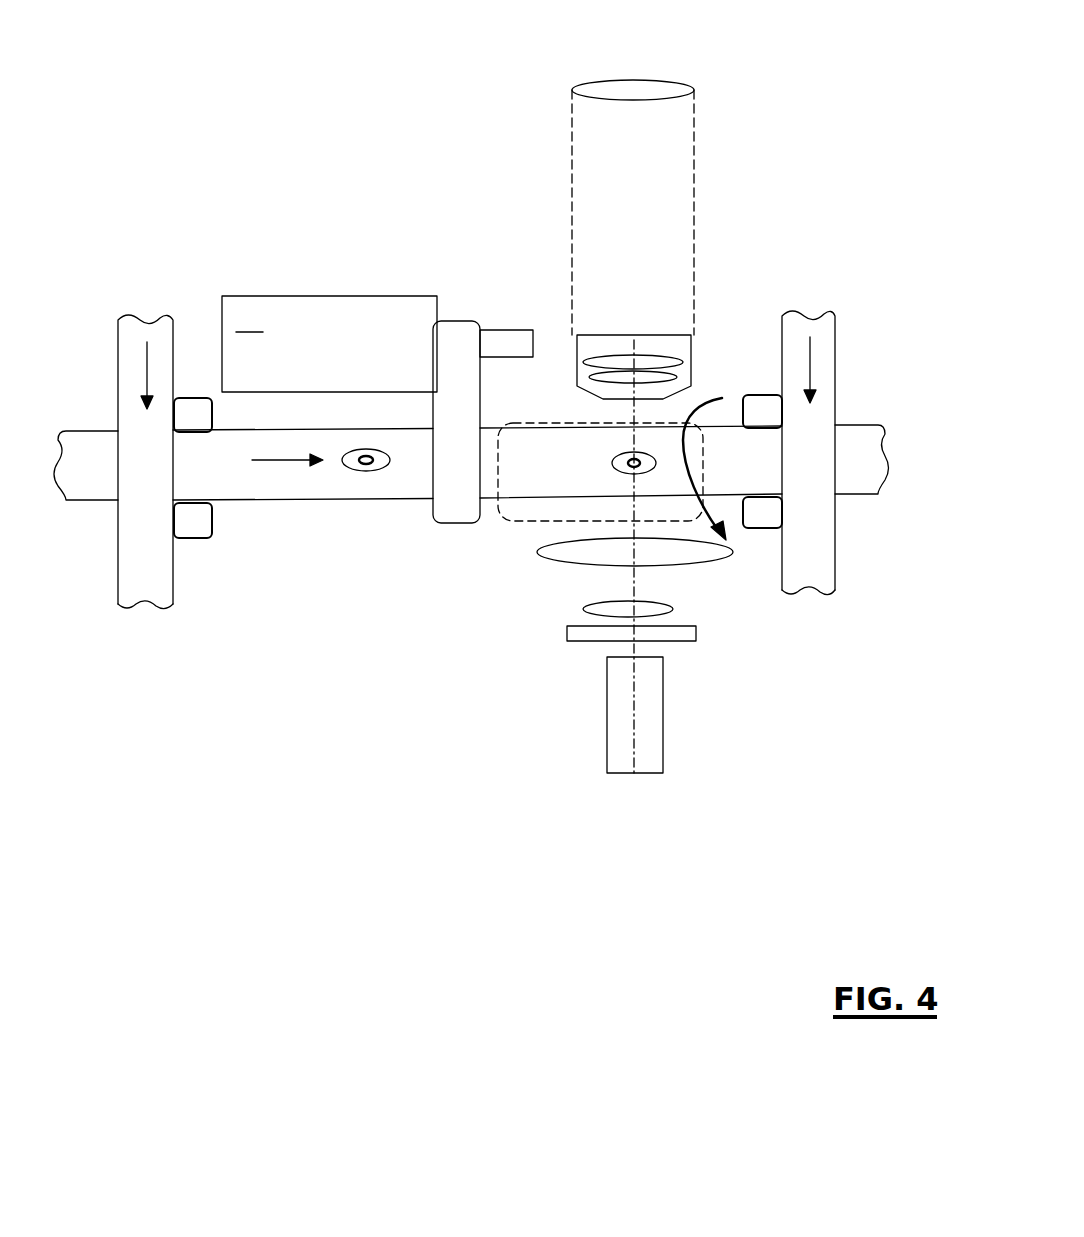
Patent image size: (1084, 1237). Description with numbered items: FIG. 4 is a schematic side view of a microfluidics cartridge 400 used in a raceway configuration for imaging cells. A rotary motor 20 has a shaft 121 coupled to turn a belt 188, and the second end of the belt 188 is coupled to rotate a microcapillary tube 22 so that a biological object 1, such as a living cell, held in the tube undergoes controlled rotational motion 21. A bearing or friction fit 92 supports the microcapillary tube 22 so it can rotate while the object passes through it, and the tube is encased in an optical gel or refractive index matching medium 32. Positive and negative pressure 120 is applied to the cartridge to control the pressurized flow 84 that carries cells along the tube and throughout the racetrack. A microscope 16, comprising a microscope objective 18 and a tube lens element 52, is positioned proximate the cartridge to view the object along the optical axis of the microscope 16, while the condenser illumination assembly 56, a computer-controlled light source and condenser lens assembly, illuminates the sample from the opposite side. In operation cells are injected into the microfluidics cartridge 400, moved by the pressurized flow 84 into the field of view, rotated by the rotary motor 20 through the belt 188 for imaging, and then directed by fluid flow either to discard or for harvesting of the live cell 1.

The biological object 1 is at (370, 470).
The microscope 16 is at (572, 128).
The microscope objective 18 is at (692, 348).
The rotary motor 20 is at (329, 344).
The rotational motion 21 is at (699, 420).
The microcapillary tube 22 is at (507, 508).
The optical gel 32 is at (848, 512).
The tube lens element 52 is at (632, 79).
The condenser illumination assembly 56 is at (528, 536).
The pressurized flow 84 is at (265, 461).
The bearing 92 is at (181, 398).
The positive and negative pressure 120 is at (153, 345).
The shaft 121 is at (507, 338).
The belt 188 is at (453, 321).
The microfluidics cartridge 400 is at (336, 278).